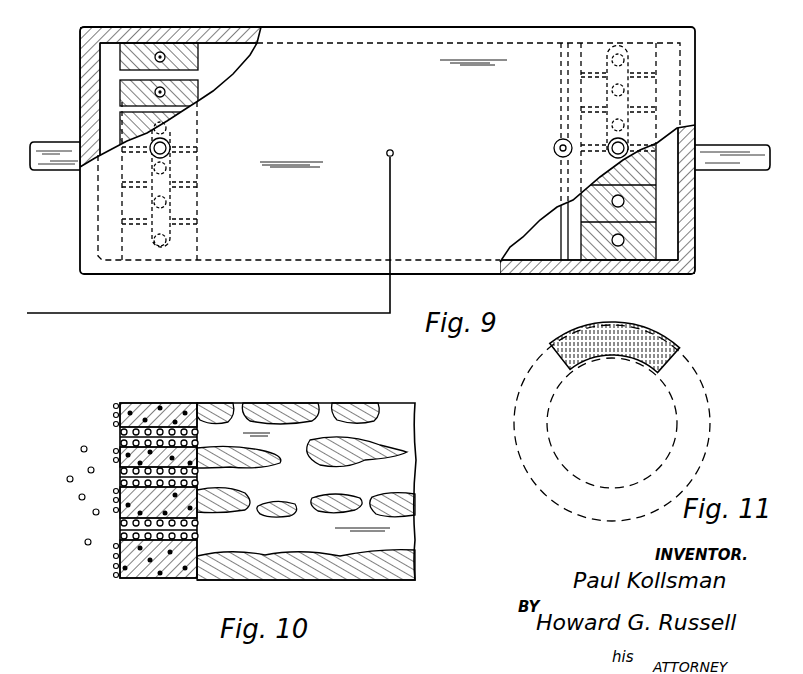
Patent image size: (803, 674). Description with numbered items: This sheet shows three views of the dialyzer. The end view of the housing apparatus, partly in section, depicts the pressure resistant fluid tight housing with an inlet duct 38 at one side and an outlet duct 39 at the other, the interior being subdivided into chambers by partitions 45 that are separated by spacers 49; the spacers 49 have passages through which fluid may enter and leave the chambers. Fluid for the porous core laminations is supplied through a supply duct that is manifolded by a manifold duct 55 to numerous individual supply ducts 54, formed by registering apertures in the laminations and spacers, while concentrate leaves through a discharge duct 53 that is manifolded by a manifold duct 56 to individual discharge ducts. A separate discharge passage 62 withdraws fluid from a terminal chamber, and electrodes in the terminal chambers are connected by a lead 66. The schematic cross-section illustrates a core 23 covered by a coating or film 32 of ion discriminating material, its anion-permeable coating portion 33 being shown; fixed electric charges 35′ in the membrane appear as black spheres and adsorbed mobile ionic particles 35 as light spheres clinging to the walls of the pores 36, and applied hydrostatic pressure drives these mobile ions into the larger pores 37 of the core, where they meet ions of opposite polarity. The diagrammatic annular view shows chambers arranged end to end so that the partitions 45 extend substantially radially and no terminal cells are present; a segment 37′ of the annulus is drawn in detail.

In FIG. 9, the inlet duct 38 is at (72, 168).
In FIG. 9, the outlet duct 39 is at (720, 165).
In FIG. 9, the spacer 49 is at (124, 97).
In FIG. 9, the discharge duct 53 is at (171, 146).
In FIG. 9, the individual supply duct 54 is at (622, 48).
In FIG. 9, the manifold duct 55 is at (630, 60).
In FIG. 9, the manifold duct 56 is at (154, 240).
In FIG. 9, the discharge passage 62 is at (555, 151).
In FIG. 9, the lead 66 is at (286, 310).
In FIG. 10, the core 23 is at (412, 500).
In FIG. 10, the coating or film 32 is at (158, 510).
In FIG. 10, the coating portion 33 is at (158, 502).
In FIG. 10, the adsorbed mobile ionic particles 35 is at (116, 471).
In FIG. 10, the fixed electric charges 35′ is at (165, 428).
In FIG. 10, the pores 36 is at (198, 437).
In FIG. 10, the pores 37 is at (302, 447).
In FIG. 11, the ring segment 37′ is at (655, 341).
In FIG. 11, the partition 45 is at (591, 330).